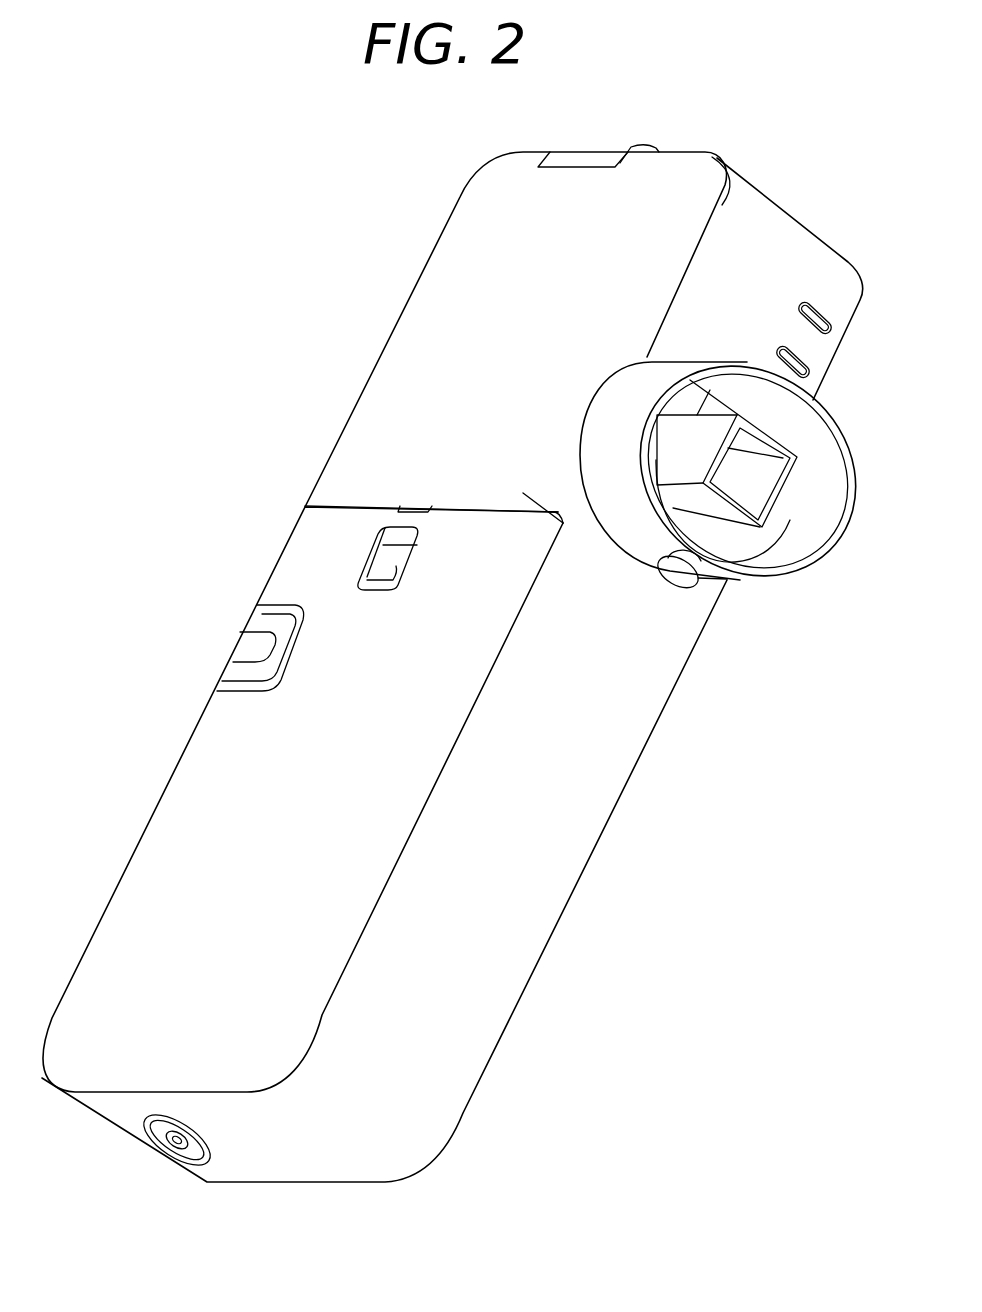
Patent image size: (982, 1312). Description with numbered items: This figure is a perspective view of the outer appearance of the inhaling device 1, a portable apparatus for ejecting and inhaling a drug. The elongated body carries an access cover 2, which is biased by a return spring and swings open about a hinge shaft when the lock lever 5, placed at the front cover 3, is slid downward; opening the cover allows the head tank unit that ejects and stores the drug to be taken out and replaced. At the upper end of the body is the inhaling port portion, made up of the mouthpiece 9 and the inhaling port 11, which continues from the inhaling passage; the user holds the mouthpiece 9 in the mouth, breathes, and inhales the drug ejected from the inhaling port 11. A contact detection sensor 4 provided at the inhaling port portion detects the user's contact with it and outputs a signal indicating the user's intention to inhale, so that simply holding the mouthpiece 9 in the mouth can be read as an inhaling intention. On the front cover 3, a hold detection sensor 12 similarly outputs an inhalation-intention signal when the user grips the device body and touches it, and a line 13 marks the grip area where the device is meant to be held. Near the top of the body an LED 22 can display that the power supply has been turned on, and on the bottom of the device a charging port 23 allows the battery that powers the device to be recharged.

The inhaling device 1 is at (550, 870).
The access cover 2 is at (427, 350).
The front cover 3 is at (313, 543).
The contact detection sensor 4 is at (678, 575).
The lock lever 5 is at (380, 560).
The mouthpiece 9 is at (723, 580).
The inhaling port 11 is at (760, 485).
The hold detection sensor 12 is at (253, 642).
The line 13 is at (258, 607).
The LED 22 is at (777, 348).
The charging port 23 is at (163, 1147).